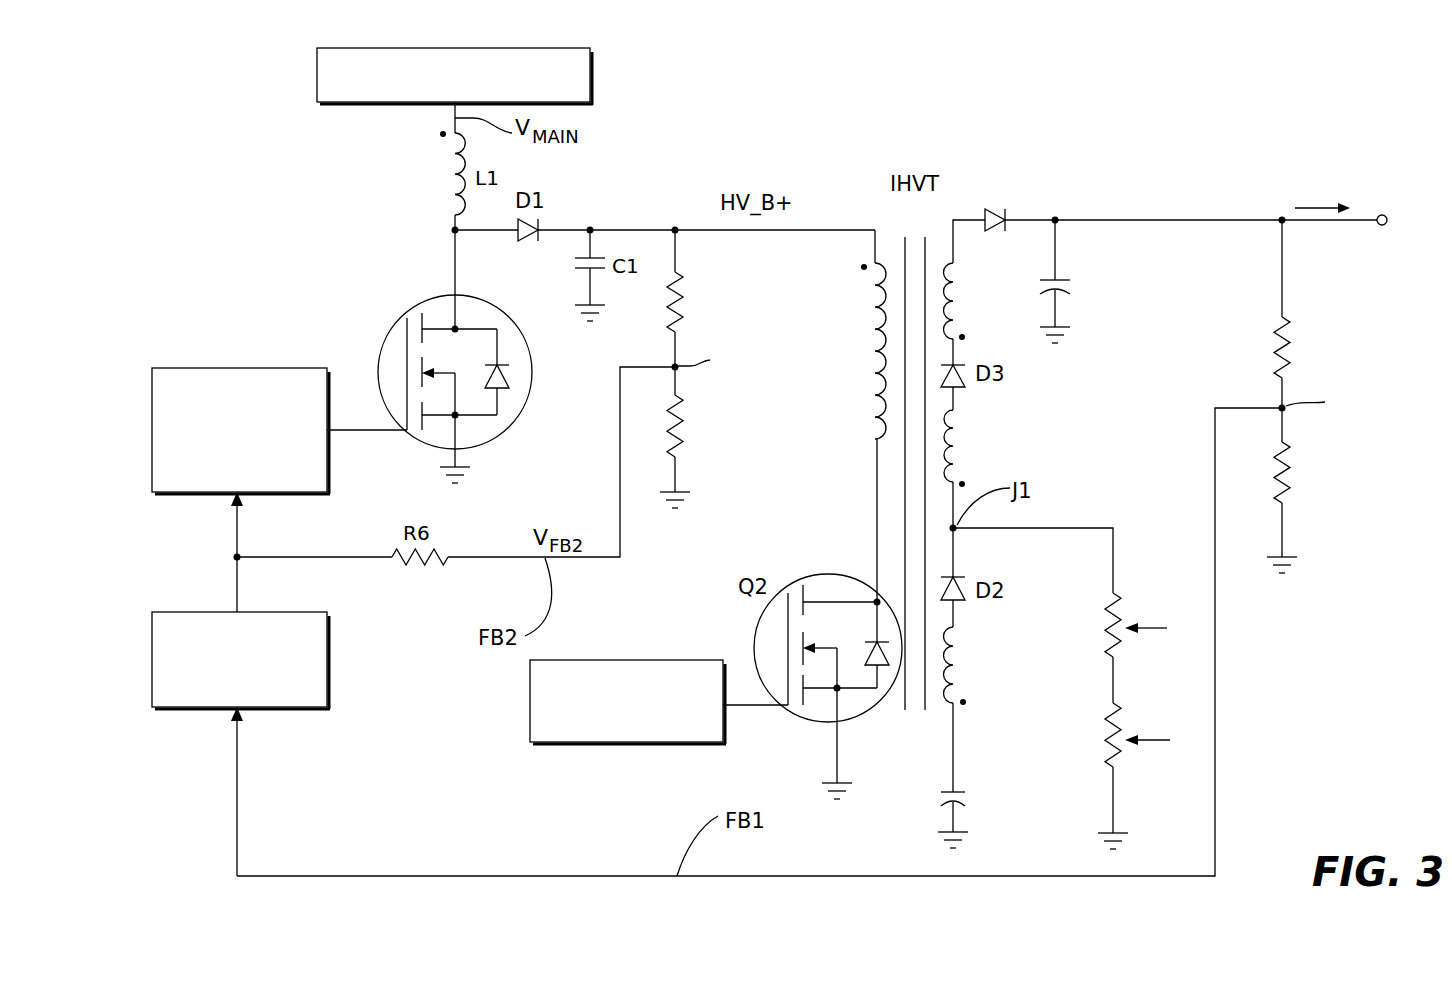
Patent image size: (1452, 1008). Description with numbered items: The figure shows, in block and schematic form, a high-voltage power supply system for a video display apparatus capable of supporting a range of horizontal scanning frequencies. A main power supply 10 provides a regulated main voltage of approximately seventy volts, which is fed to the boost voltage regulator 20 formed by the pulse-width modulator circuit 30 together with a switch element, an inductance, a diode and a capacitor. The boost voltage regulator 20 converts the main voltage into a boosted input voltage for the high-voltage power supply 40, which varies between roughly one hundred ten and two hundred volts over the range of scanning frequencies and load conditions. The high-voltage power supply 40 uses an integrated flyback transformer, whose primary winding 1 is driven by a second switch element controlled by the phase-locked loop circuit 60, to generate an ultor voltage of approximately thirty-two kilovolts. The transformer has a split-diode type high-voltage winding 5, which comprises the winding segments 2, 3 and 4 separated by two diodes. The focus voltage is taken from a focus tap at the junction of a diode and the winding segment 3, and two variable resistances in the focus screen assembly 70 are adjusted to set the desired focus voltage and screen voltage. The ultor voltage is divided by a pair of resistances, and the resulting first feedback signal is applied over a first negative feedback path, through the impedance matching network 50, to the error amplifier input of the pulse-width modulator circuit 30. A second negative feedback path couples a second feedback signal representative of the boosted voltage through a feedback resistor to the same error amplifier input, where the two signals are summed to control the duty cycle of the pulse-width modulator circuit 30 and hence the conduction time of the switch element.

The main power supply 10 is at (590, 79).
The boost voltage regulator 20 is at (595, 383).
The pulse-width modulator circuit 30 is at (208, 368).
The high-voltage power supply 40 is at (1078, 410).
The impedance matching network 50 is at (282, 709).
The phase-locked loop circuit 60 is at (613, 744).
The focus screen assembly 70 is at (1054, 743).
The transformer primary winding 1 is at (880, 240).
The high-voltage winding 5 is at (950, 238).
The winding segment 4 is at (948, 312).
The winding segment 3 is at (948, 448).
The winding segment 2 is at (948, 672).